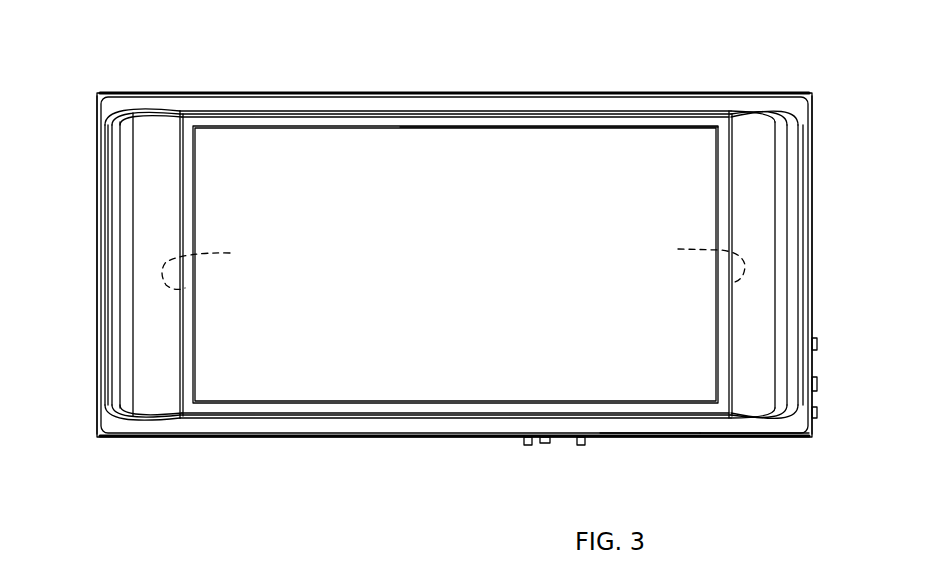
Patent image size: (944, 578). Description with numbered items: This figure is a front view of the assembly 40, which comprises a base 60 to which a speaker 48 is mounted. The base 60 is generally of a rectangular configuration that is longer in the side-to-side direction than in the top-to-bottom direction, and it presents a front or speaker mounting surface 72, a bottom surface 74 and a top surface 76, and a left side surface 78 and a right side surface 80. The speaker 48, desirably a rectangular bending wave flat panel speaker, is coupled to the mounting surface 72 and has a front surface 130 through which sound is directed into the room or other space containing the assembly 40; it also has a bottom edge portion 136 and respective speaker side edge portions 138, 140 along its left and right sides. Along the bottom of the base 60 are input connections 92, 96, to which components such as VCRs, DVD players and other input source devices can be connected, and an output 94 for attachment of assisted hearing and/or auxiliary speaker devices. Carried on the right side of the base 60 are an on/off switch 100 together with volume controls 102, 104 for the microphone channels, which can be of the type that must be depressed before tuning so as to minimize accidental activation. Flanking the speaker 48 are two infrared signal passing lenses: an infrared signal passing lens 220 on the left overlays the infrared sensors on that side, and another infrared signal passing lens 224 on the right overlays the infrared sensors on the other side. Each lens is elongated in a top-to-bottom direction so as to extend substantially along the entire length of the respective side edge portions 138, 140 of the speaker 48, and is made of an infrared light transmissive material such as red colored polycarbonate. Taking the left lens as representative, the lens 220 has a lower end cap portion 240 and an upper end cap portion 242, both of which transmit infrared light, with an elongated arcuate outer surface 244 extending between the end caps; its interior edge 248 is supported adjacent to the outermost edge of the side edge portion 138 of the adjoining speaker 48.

The assembly 40 is at (730, 65).
The speaker 48 is at (476, 150).
The base 60 is at (693, 437).
The front or speaker mounting surface 72 is at (638, 437).
The bottom surface 74 is at (352, 438).
The top surface 76 is at (370, 93).
The left side surface 78 is at (97, 248).
The right side surface 80 is at (813, 265).
The input connection 92 is at (528, 446).
The output 94 is at (545, 444).
The input connection 96 is at (580, 446).
The on/off switch 100 is at (819, 413).
The volume control 102 is at (819, 384).
The volume control 104 is at (819, 344).
The front surface 130 is at (560, 150).
The bottom edge portion 136 is at (448, 437).
The speaker side edge portion 138 is at (652, 93).
The speaker side edge portion 140 is at (687, 259).
The infrared signal passing lens 220 is at (117, 208).
The infrared signal passing lens 224 is at (790, 172).
The lower infrared light transmitting end cap portion 240 is at (140, 430).
The upper infrared light transmitting end cap portion 242 is at (138, 97).
The elongated arcuate outer surface 244 is at (117, 386).
The interior edge 248 is at (180, 340).